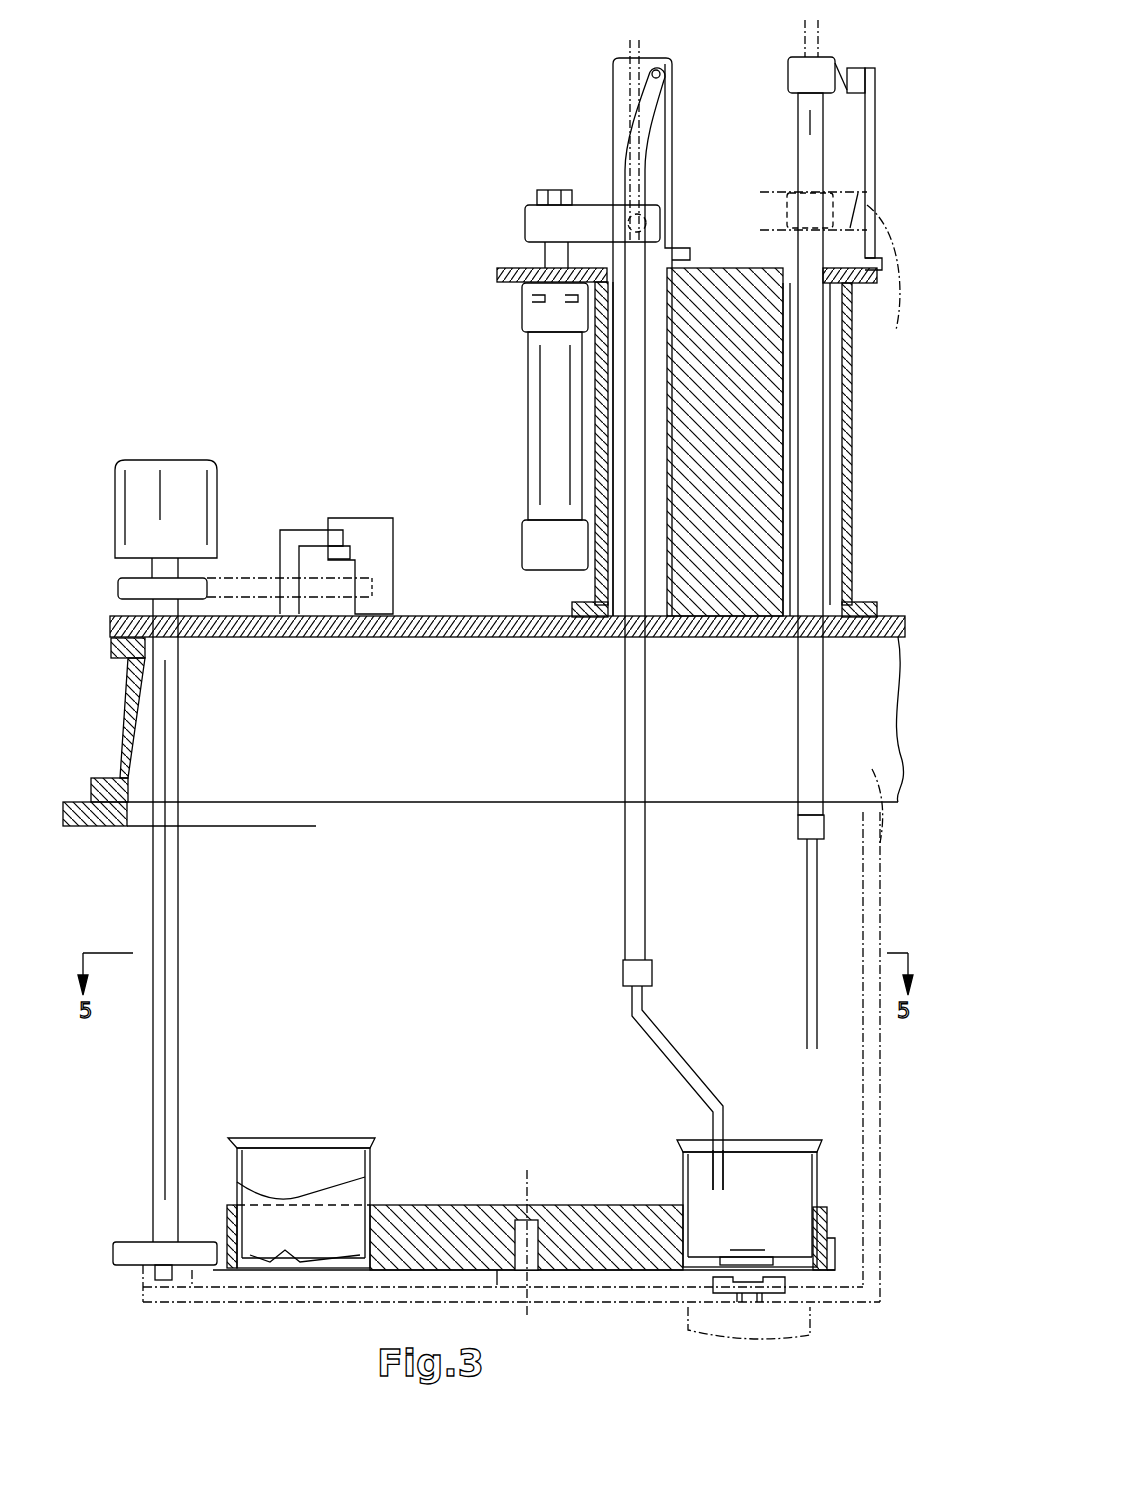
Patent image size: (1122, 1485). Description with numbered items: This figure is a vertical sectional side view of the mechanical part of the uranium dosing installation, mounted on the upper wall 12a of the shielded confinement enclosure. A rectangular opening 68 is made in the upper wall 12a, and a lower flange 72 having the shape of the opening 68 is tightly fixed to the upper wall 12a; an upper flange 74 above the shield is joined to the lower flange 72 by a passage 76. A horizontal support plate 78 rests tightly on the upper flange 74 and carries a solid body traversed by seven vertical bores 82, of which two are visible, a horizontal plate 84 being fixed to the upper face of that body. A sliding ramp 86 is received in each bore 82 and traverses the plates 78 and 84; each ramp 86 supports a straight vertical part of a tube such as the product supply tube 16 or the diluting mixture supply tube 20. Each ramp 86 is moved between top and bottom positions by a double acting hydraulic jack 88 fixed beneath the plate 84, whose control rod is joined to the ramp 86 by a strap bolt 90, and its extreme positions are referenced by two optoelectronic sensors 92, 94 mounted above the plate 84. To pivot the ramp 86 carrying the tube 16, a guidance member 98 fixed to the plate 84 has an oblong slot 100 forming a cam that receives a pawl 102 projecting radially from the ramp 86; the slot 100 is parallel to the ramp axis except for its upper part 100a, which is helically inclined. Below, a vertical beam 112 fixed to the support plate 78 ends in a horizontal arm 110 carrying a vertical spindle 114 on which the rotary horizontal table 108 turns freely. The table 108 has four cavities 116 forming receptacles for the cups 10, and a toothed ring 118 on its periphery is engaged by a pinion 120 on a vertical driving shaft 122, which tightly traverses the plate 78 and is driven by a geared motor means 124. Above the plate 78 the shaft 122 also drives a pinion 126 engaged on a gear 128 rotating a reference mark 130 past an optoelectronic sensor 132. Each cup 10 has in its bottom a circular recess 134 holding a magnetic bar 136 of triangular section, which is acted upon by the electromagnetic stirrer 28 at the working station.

The cup 10 is at (378, 1152).
The upper wall 12a is at (102, 808).
The product supply tube 16 is at (640, 1030).
The diluting mixture supply tube 20 is at (808, 890).
The electromagnetic stirrer 28 is at (690, 1312).
The rectangular opening 68 is at (162, 806).
The lower flange 72 is at (112, 780).
The upper flange 74 is at (128, 648).
The passage 76 is at (132, 720).
The horizontal support plate 78 is at (572, 638).
The vertical bore 82 is at (662, 553).
The horizontal plate 84 is at (497, 276).
The sliding ramp 86 is at (653, 378).
The double acting hydraulic jack 88 is at (520, 414).
The strap bolt 90 is at (525, 225).
The optoelectronic sensor 92 is at (850, 70).
The optoelectronic sensor 94 is at (830, 261).
The guidance member 98 is at (616, 84).
The oblong slot 100 is at (630, 150).
The upper part of slot 100a is at (660, 78).
The pawl 102 is at (648, 224).
The rotary horizontal table 108 is at (464, 1203).
The horizontal arm 110 is at (862, 1302).
The vertical beam 112 is at (514, 969).
The vertical spindle 114 is at (522, 1218).
The cavity 116 is at (246, 1222).
The toothed ring 118 is at (832, 1262).
The pinion 120 is at (206, 1257).
The vertical driving shaft 122 is at (176, 1042).
The geared motor means 124 is at (176, 468).
The pinion 126 is at (186, 592).
The gear 128 is at (384, 582).
The reference mark 130 is at (305, 532).
The optoelectronic sensor 132 is at (370, 520).
The circular recess 134 is at (826, 1232).
The magnetic bar 136 is at (296, 1262).